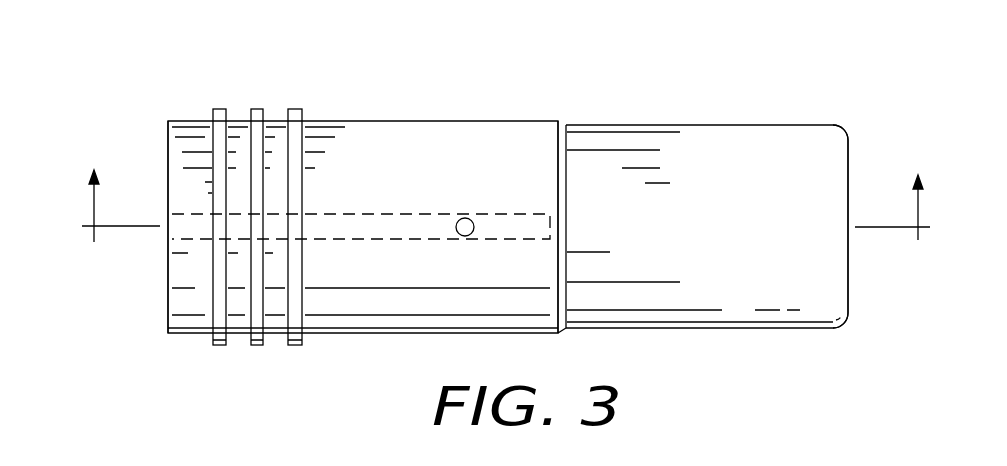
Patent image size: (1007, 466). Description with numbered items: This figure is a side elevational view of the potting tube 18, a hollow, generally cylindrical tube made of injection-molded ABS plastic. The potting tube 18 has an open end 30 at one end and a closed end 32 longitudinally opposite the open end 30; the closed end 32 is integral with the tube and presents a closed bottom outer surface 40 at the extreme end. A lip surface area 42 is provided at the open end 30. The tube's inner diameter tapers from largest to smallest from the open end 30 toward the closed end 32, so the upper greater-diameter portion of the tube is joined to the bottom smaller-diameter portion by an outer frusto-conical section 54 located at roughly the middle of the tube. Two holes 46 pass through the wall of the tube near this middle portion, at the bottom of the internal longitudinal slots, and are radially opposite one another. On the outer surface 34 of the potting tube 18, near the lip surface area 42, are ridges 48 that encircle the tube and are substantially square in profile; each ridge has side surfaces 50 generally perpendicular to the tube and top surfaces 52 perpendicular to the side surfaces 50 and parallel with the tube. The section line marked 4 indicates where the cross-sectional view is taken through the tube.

The potting tube 18 is at (715, 108).
The open end 30 is at (152, 282).
The closed end 32 is at (878, 278).
The outer surface 34 is at (361, 165).
The closed bottom outer surface 40 is at (850, 153).
The lip surface area 42 is at (168, 135).
The holes 46 is at (464, 218).
The ridges 48 is at (215, 70).
The side surfaces 50 is at (215, 343).
The top surfaces 52 is at (253, 347).
The frusto-conical section 54 is at (558, 122).
The section line 4- 4 is at (506, 193).